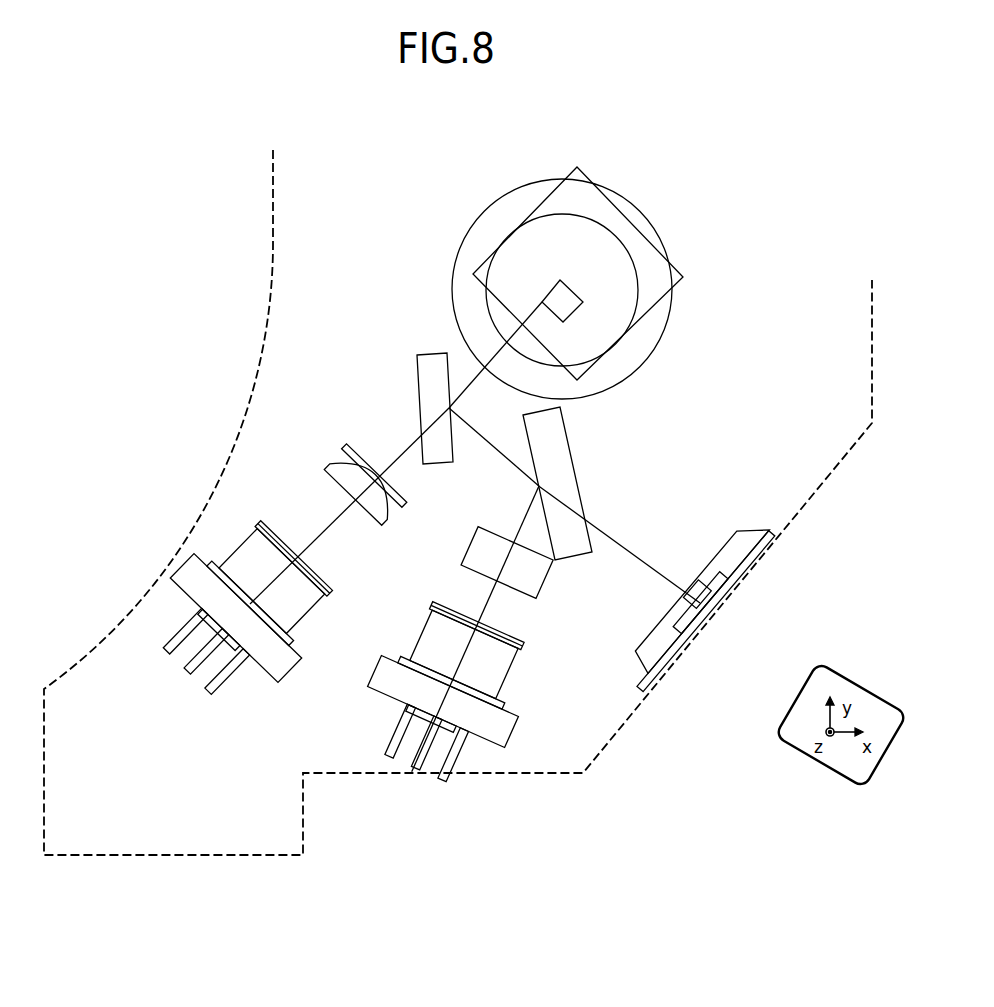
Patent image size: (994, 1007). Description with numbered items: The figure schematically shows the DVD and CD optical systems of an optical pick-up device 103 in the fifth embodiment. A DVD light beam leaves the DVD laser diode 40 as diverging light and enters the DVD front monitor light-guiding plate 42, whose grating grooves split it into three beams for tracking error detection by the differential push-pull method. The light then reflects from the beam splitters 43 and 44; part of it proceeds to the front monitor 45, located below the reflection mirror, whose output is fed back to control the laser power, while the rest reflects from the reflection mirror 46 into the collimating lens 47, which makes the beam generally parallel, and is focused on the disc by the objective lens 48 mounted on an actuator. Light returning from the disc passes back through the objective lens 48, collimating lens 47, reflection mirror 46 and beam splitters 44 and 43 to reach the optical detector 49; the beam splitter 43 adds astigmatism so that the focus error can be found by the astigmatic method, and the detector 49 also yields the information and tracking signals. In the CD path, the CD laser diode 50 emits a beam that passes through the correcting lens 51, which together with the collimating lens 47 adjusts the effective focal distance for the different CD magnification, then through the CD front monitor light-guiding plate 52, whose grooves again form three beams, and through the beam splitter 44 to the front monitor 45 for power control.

The DVD laser diode 40 is at (508, 677).
The DVD front monitor light-guiding plate 42 is at (545, 578).
The beam splitter 43 is at (567, 430).
The beam splitter 44 is at (417, 382).
The front monitor 45 is at (570, 290).
The reflection mirror 46 is at (683, 277).
The collimating lens 47 is at (657, 352).
The objective lens 48 is at (487, 313).
The optical detector 49 is at (735, 578).
The CD laser diode 50 is at (245, 548).
The correcting lens 51 is at (335, 483).
The CD front monitor light-guiding plate 52 is at (345, 445).
The optical pick-up device 103 is at (540, 773).